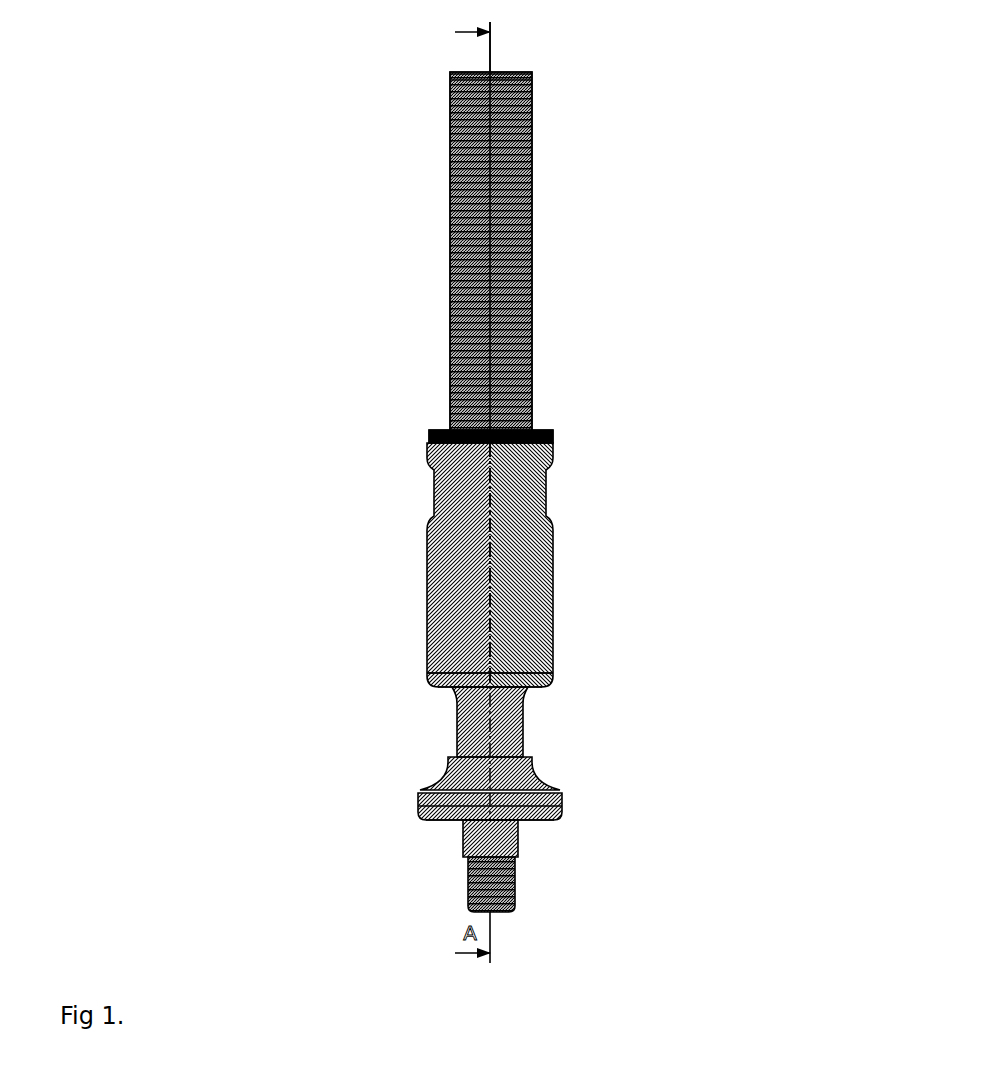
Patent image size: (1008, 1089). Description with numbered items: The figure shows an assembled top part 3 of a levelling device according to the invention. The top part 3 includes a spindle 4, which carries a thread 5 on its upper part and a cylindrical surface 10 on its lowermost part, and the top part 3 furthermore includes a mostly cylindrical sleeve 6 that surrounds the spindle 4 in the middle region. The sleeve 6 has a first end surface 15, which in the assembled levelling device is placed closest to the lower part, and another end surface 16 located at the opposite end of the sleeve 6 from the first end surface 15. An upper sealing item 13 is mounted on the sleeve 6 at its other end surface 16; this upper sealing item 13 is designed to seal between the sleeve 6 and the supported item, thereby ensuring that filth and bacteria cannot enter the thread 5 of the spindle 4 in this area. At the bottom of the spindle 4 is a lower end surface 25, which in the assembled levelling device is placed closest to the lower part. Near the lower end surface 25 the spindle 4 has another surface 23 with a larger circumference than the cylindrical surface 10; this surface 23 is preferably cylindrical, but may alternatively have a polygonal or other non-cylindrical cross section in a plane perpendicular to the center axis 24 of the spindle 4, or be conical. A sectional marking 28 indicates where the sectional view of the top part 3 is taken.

The top part 3 is at (725, 332).
The spindle 4 is at (410, 236).
The thread 5 is at (450, 322).
The sleeve 6 is at (587, 565).
The cylindrical surface 10 is at (535, 693).
The upper sealing item 13 is at (548, 434).
The first end surface 15 is at (447, 692).
The other end surface 16 is at (425, 440).
The surface 23 is at (412, 812).
The center axis 24 is at (480, 595).
The lower end surface 25 is at (438, 826).
The sectional marking 28 is at (498, 34).